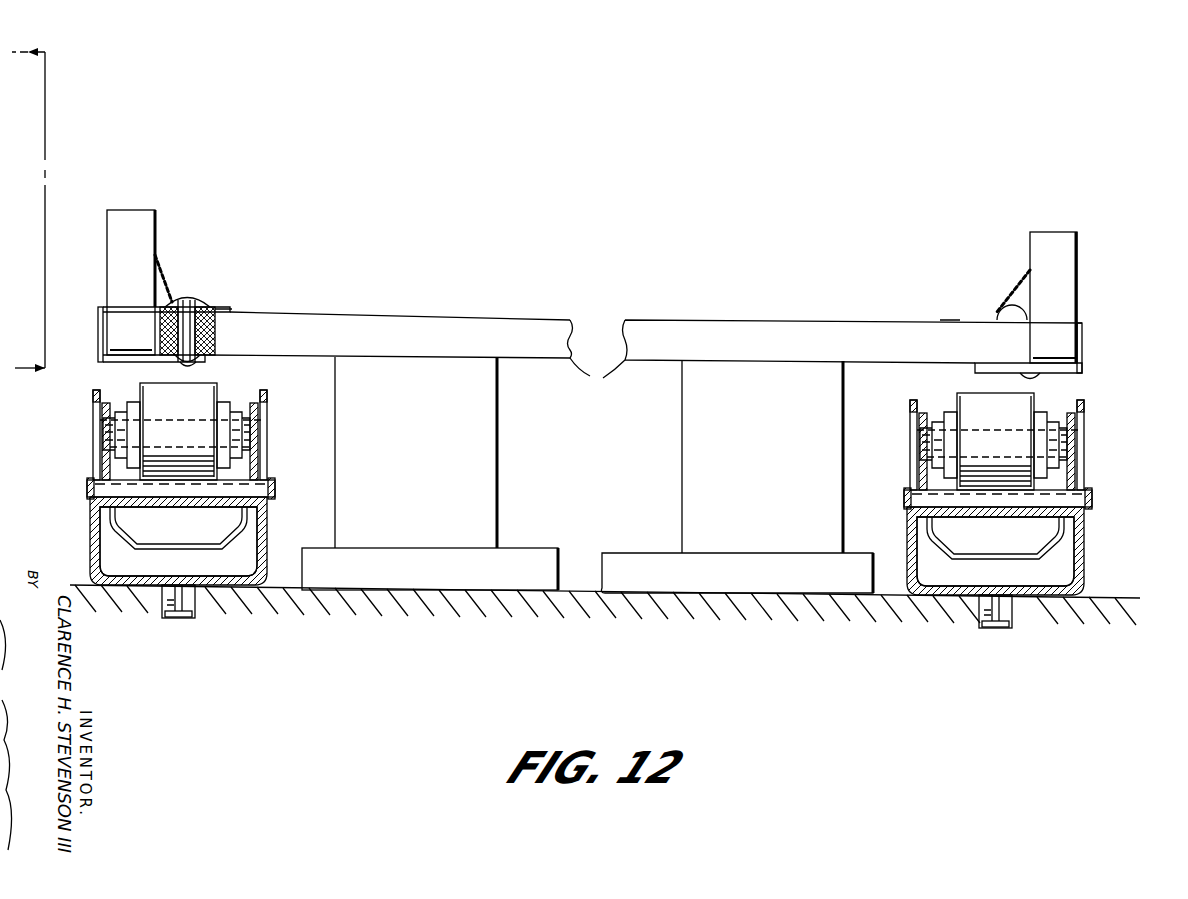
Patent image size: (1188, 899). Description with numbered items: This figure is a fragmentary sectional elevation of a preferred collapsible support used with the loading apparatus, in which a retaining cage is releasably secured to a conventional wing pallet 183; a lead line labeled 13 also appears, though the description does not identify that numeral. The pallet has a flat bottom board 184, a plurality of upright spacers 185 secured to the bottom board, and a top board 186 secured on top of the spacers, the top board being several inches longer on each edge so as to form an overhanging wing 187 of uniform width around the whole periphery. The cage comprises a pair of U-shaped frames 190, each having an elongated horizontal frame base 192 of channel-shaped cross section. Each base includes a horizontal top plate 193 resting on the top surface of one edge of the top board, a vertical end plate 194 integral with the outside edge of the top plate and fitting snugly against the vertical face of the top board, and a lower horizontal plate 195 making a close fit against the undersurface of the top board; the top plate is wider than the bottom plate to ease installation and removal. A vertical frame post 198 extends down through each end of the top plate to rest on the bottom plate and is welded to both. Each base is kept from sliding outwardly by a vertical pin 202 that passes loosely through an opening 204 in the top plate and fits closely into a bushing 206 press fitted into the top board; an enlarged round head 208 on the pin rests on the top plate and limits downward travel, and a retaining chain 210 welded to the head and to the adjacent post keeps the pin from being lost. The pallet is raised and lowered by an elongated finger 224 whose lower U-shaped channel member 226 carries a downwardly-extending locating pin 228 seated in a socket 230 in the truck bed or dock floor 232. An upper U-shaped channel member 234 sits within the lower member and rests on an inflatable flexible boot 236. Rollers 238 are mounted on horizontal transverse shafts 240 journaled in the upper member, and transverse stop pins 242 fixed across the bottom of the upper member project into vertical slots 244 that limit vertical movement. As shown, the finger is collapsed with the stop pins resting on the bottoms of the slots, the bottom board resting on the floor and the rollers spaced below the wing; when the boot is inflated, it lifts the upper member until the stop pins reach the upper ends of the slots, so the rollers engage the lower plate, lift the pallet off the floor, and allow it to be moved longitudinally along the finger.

The conveyor system 13 is at (22, 208).
The wing pallet 183 is at (643, 429).
The bottom board 184 is at (556, 562).
The upright spacers 185 is at (470, 490).
The top board 186 is at (597, 383).
The overhanging wing 187 is at (312, 335).
The U-shaped frame 190 is at (607, 301).
The frame base 192 is at (96, 309).
The top plate 193 is at (225, 308).
The vertical end plate 194 is at (98, 328).
The lower horizontal plate 195 is at (100, 362).
The vertical frame post 198 is at (150, 224).
The vertical pin 202 is at (190, 360).
The opening 204 is at (200, 302).
The bushing 206 is at (216, 330).
The enlarged round head 208 is at (187, 302).
The retaining chain 210 is at (161, 278).
The elongated finger 224 is at (84, 533).
The lower U-shaped channel member 226 is at (265, 512).
The locating pin 228 is at (170, 600).
The socket 230 is at (197, 603).
The truck bed or dock floor 232 is at (277, 583).
The upper U-shaped channel member 234 is at (262, 468).
The inflatable flexible boot 236 is at (147, 530).
The roller 238 is at (162, 390).
The transverse shaft 240 is at (222, 408).
The stop pin 242 is at (87, 490).
The vertical slot 244 is at (93, 415).